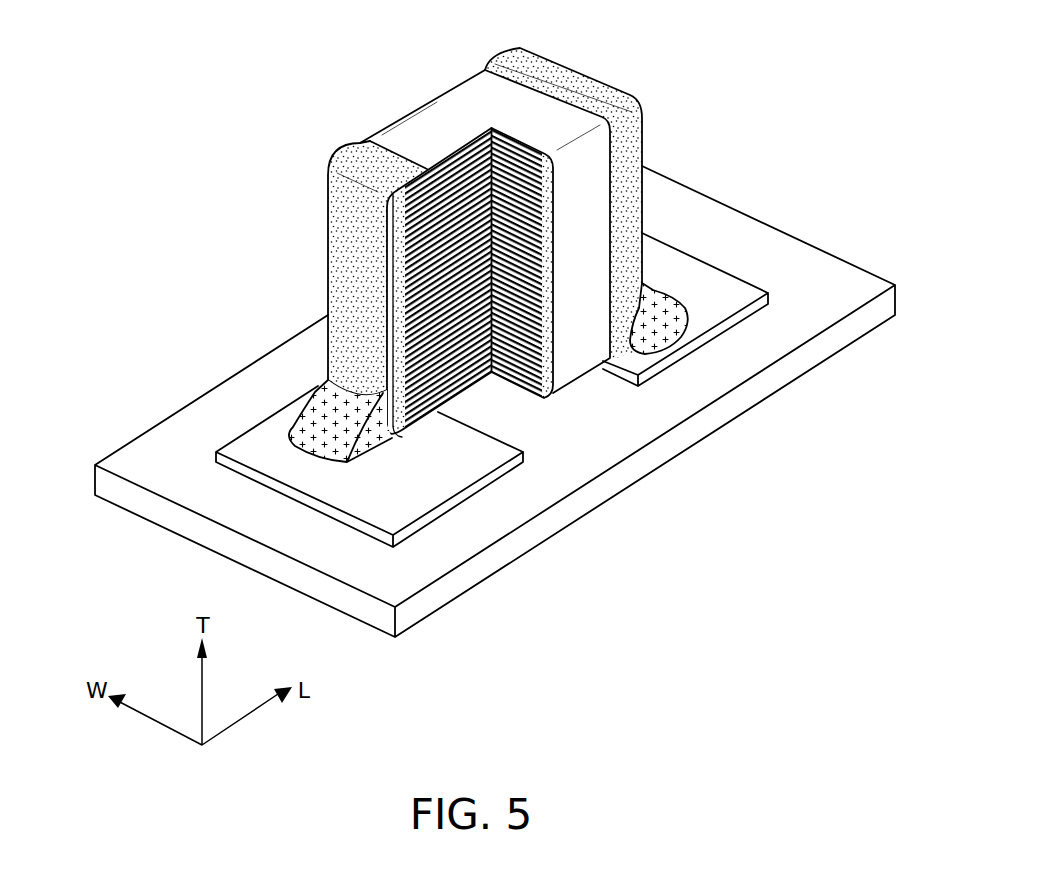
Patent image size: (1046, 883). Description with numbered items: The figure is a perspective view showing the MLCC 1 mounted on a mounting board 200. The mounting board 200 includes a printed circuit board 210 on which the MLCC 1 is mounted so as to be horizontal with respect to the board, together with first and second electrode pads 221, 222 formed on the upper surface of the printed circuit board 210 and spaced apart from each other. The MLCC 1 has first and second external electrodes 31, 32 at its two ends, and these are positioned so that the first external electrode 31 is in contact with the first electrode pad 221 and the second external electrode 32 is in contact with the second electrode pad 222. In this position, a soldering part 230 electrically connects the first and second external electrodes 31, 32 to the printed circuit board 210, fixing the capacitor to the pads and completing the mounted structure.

The MLCC 1 is at (469, 227).
The first external electrode 31 is at (352, 150).
The second external electrode 32 is at (500, 54).
The mounting board 200 is at (495, 401).
The printed circuit board 210 is at (618, 477).
The first electrode pad 221 is at (430, 478).
The second electrode pad 222 is at (713, 288).
The soldering part 230 is at (320, 410).